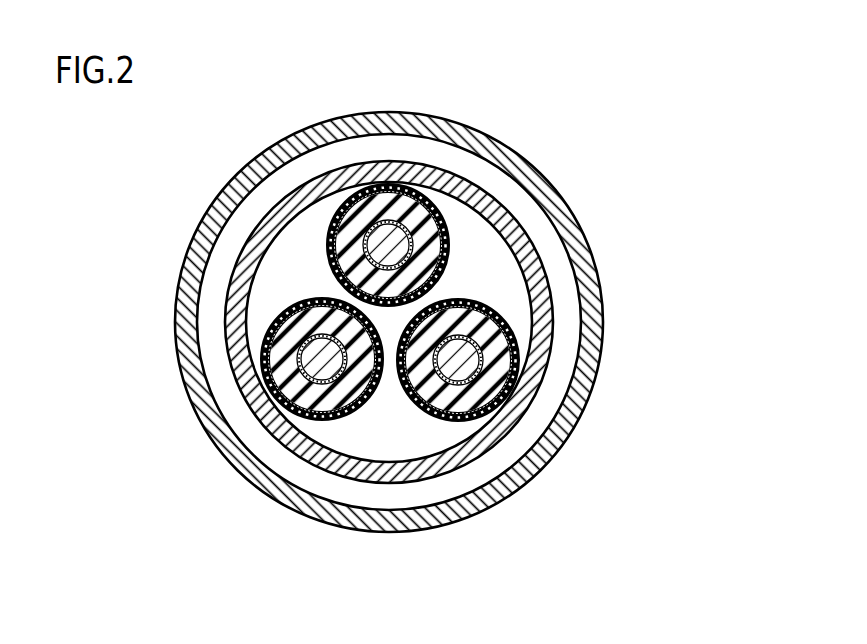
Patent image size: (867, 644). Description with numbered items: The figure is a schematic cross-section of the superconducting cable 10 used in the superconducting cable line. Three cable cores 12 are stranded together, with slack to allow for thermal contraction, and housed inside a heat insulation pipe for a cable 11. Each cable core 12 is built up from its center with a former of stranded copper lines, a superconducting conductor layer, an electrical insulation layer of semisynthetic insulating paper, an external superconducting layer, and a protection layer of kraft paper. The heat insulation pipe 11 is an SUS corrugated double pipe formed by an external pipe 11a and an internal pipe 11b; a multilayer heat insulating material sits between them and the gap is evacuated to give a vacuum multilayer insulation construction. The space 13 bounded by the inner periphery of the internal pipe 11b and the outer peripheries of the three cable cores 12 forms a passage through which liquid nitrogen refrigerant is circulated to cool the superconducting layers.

The superconducting cable 10 is at (474, 338).
The heat insulation pipe for a cable 11 is at (474, 297).
The external pipe 11a is at (444, 322).
The internal pipe 11b is at (718, 173).
The cable core 12 is at (537, 570).
The space 13 is at (459, 322).